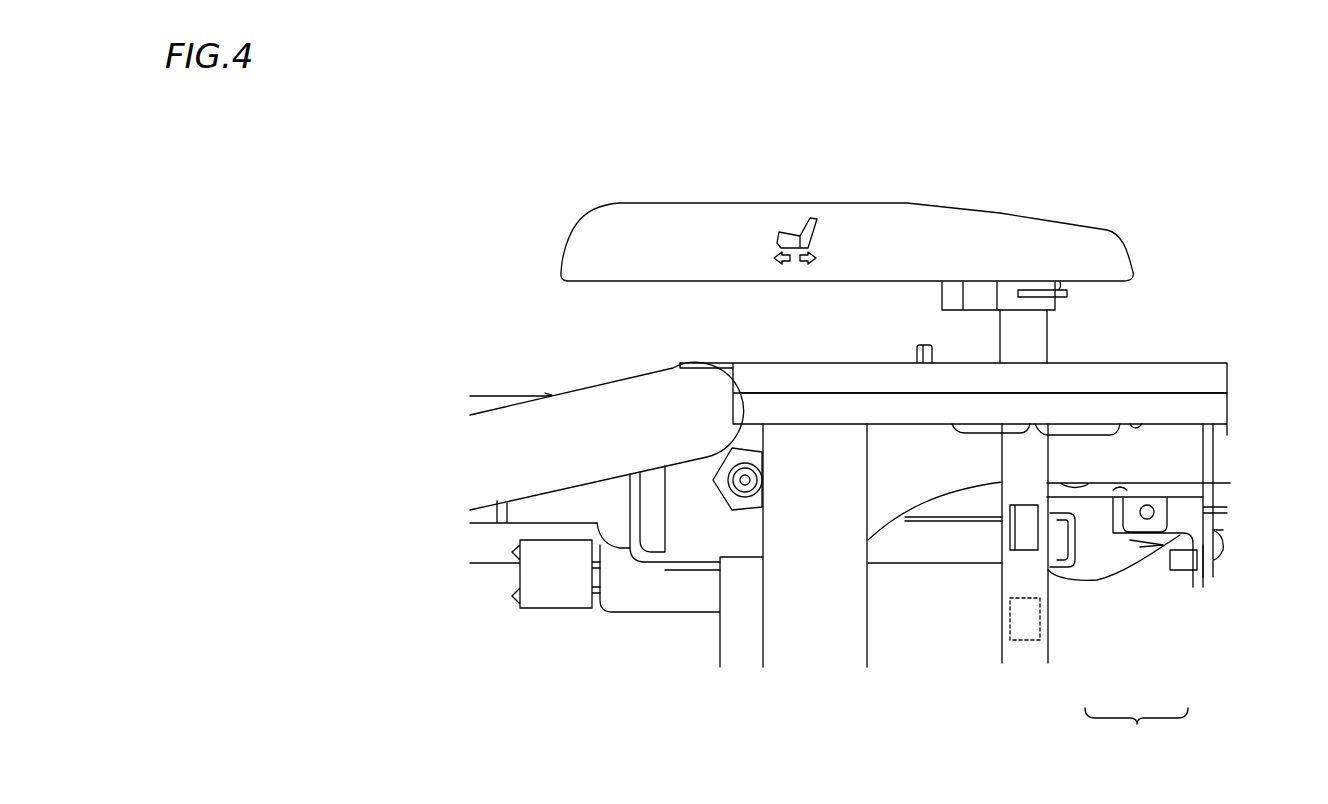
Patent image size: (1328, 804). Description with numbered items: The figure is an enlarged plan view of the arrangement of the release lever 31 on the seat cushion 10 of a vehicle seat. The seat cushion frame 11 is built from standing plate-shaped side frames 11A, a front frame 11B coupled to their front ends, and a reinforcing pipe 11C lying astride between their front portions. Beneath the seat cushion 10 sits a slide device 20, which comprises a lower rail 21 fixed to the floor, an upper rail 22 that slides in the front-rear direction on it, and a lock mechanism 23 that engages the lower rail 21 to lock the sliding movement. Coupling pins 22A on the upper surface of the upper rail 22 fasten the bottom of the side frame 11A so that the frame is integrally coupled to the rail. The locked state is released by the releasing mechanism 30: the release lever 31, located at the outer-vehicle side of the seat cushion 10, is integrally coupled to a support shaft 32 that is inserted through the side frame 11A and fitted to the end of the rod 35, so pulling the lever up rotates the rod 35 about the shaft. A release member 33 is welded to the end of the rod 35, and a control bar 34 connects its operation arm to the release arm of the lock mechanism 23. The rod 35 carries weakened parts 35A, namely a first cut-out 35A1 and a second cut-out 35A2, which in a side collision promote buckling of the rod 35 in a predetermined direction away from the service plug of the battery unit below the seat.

The seat cushion 10 is at (1113, 182).
The seat cushion frame 11 is at (1197, 362).
The side frame 11A is at (1123, 372).
The front frame 11B is at (577, 413).
The reinforcing pipe 11C is at (782, 612).
The slide device 20 is at (1240, 575).
The lower rail 21 is at (495, 398).
The upper rail 22 is at (967, 503).
The coupling pin 22A is at (730, 495).
The lock mechanism 23 is at (1102, 555).
The releasing mechanism 30 is at (1096, 320).
The release lever 31 is at (687, 218).
The support shaft 32 is at (1008, 346).
The release member 33 is at (978, 428).
The control bar 34 is at (1210, 447).
The rod 35 is at (1010, 653).
The weakened parts 35A is at (1136, 731).
The first cut-out 35A1 is at (1042, 538).
The second cut-out 35A2 is at (1043, 628).